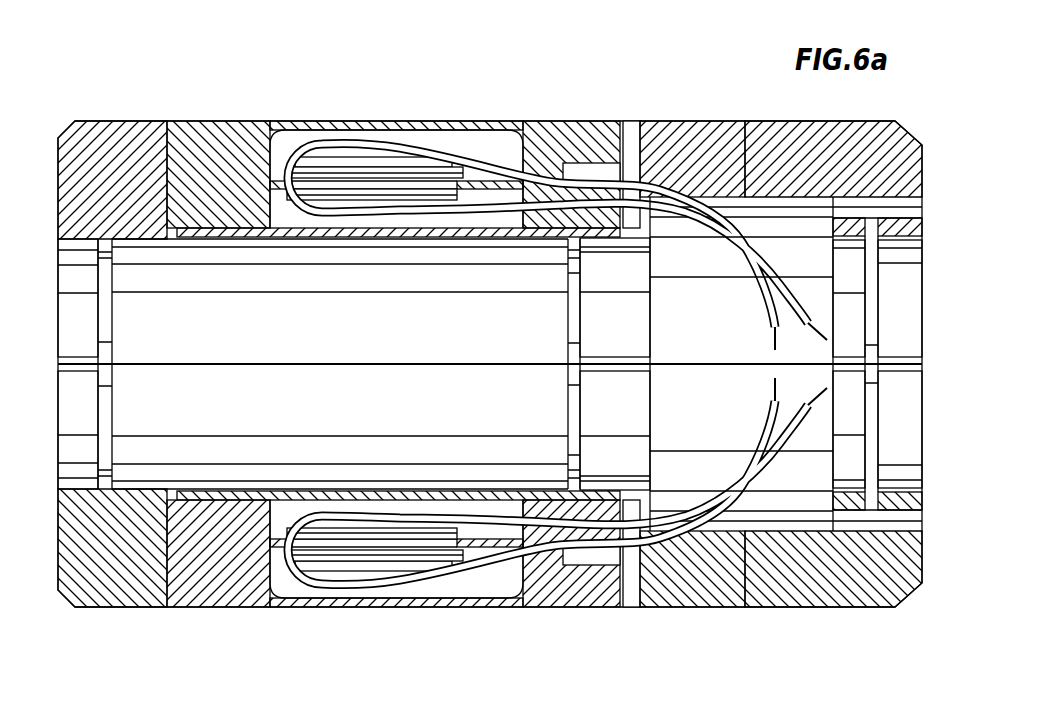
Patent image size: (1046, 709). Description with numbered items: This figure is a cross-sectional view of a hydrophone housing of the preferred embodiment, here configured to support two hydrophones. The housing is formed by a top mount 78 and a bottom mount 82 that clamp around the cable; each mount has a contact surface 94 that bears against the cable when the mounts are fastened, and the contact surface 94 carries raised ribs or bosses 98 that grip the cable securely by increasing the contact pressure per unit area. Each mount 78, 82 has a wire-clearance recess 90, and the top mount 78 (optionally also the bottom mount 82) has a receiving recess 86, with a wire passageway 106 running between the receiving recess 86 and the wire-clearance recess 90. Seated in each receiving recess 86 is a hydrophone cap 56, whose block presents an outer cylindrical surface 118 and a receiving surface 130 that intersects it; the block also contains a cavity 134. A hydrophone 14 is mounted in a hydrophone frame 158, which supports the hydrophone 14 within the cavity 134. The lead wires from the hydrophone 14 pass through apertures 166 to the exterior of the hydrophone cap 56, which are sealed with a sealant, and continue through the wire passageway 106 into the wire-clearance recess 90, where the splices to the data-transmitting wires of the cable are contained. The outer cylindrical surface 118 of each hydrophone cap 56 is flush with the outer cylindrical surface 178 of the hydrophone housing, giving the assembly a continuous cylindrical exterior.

The hydrophone 14 is at (375, 165).
The hydrophone cap 56 is at (264, 121).
The top mount 78 is at (672, 121).
The bottom mount 82 is at (672, 607).
The receiving recess 86 is at (405, 222).
The wire-clearance recess 90 is at (700, 319).
The contact surface 94 is at (190, 424).
The bosses 98 is at (108, 330).
The wire passageway 106 is at (637, 240).
The outer cylindrical surface 118 is at (232, 121).
The receiving surface 130 is at (218, 235).
The cavity 134 is at (455, 135).
The hydrophone frame 158 is at (512, 172).
The apertures 166 is at (592, 178).
The outer cylindrical surface 178 is at (128, 121).